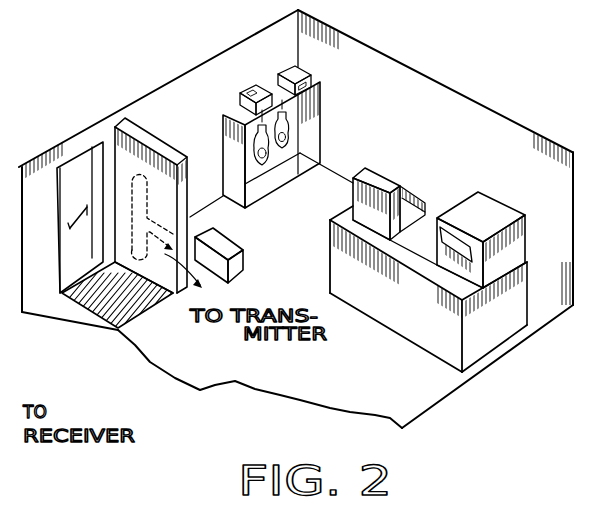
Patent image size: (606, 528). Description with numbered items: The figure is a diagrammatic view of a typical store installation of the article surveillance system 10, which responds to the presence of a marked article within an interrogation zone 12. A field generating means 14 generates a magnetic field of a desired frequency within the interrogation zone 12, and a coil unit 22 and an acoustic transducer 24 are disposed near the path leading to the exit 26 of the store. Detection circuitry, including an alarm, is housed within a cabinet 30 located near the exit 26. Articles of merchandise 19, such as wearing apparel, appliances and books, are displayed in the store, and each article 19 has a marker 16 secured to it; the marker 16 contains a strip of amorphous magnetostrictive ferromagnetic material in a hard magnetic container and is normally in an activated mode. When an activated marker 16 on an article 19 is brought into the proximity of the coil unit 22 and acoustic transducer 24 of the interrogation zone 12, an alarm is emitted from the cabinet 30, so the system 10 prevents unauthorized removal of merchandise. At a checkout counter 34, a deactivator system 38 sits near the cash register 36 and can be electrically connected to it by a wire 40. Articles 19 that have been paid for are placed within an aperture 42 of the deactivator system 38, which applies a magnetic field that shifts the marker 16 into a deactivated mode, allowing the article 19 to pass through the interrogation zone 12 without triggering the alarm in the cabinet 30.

The article surveillance system 10 is at (212, 337).
The interrogation zone 12 is at (153, 310).
The field generating means 14 is at (228, 247).
The marker 16 is at (253, 90).
The article 19 is at (255, 153).
The coil unit 22 is at (133, 181).
The acoustic transducer 24 is at (43, 390).
The exit 26 is at (98, 161).
The cabinet 30 is at (245, 265).
The desk 34 is at (447, 333).
The cash register 36 is at (373, 178).
The deactivator system 38 is at (485, 212).
The wire 40 is at (413, 256).
The aperture 42 is at (462, 250).